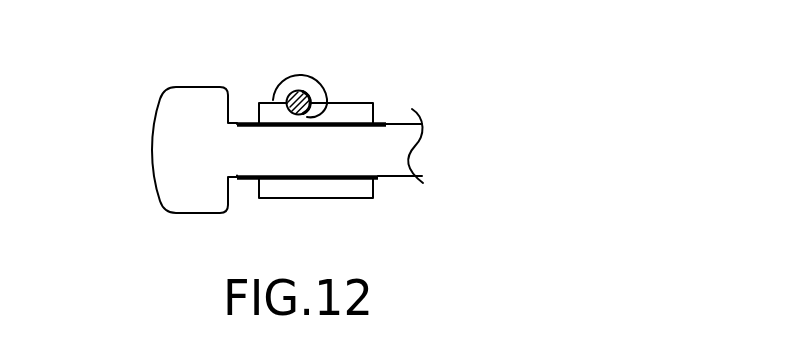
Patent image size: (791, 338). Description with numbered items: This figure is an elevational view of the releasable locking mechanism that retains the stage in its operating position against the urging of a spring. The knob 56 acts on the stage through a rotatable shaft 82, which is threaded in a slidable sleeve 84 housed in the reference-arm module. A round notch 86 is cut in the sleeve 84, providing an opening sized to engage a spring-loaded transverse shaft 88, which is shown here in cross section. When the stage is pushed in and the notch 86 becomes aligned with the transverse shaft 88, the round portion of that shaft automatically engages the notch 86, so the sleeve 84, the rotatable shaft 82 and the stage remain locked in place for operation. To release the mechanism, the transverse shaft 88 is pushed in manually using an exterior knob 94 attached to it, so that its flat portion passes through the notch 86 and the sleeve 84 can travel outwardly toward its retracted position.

The knob 56 is at (177, 136).
The rotatable shaft 82 is at (380, 150).
The slidable sleeve 84 is at (355, 117).
The round notch 86 is at (337, 102).
The transverse shaft 88 is at (314, 88).
The exterior knob 94 is at (284, 88).